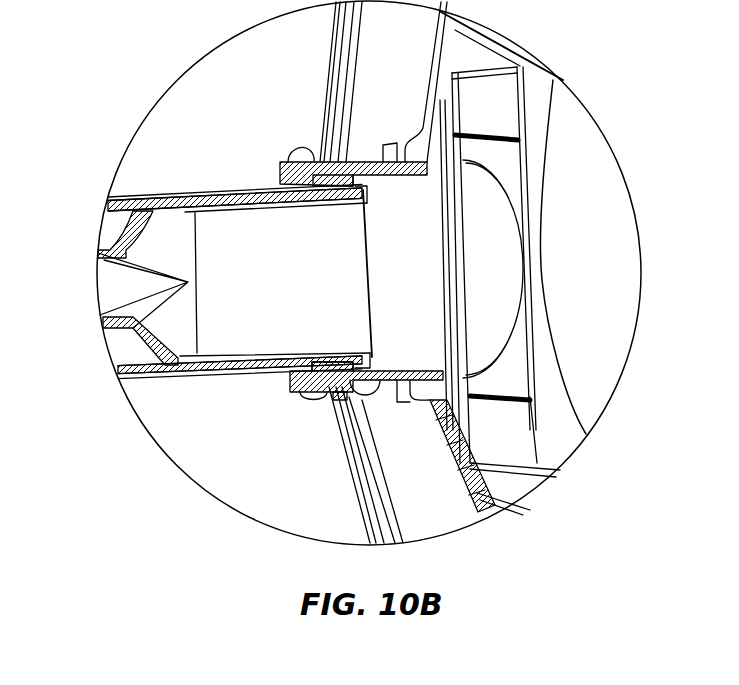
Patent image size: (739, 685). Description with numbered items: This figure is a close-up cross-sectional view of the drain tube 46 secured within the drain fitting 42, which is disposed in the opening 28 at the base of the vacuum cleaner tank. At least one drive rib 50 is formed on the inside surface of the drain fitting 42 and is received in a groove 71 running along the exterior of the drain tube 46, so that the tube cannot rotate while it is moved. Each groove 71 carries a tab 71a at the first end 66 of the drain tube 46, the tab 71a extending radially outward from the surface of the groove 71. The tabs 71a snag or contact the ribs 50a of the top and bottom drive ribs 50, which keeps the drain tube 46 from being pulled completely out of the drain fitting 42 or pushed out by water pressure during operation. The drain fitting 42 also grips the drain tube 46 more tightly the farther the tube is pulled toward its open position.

The opening 28 is at (587, 375).
The drain fitting 42 is at (297, 152).
The drain tube 46 is at (242, 278).
The drive rib 50 is at (347, 140).
The rib 50a is at (325, 192).
The first end 66 is at (370, 291).
The groove 71 is at (172, 193).
The tab 71a is at (362, 186).